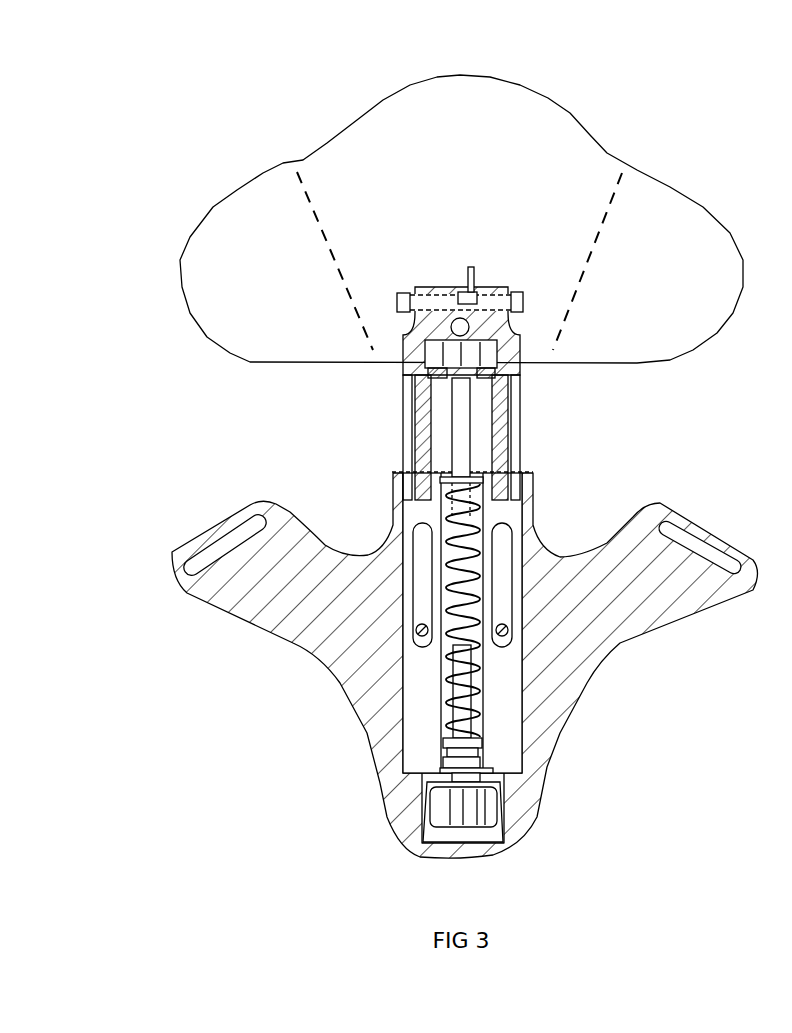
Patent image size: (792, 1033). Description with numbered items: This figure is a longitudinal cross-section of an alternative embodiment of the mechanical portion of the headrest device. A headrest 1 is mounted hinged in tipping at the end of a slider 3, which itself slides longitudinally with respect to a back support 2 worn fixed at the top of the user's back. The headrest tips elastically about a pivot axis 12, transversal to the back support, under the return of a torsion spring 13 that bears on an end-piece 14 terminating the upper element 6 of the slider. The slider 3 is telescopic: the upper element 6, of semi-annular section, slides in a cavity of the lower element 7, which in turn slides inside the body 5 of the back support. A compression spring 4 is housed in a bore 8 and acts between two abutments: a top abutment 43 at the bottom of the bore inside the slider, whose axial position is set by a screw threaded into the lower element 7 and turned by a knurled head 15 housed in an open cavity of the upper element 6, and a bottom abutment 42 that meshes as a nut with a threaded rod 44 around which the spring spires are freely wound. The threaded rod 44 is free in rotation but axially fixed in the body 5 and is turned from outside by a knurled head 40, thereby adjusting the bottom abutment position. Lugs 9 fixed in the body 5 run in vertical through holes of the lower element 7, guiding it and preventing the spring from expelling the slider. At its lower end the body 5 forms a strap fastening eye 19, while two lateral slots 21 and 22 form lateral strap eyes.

The headrest 1 is at (579, 91).
The back support 2 is at (335, 728).
The slider 3 is at (381, 410).
The compression spring 4 is at (445, 707).
The body 5 is at (352, 622).
The upper element 6 is at (500, 442).
The lower element 7 is at (502, 512).
The bore 8 is at (430, 670).
The lugs 9 is at (506, 632).
The pivot axis 12 is at (532, 297).
The torsion spring 13 is at (468, 273).
The end-piece 14 is at (423, 327).
The knurled head 15 is at (467, 348).
The fastening eye 19 is at (478, 853).
The slot 21 is at (237, 542).
The slot 22 is at (680, 540).
The knurled head 40 is at (452, 810).
The bottom abutment 42 is at (485, 743).
The top abutment 43 is at (442, 475).
The threaded rod 44 is at (470, 680).